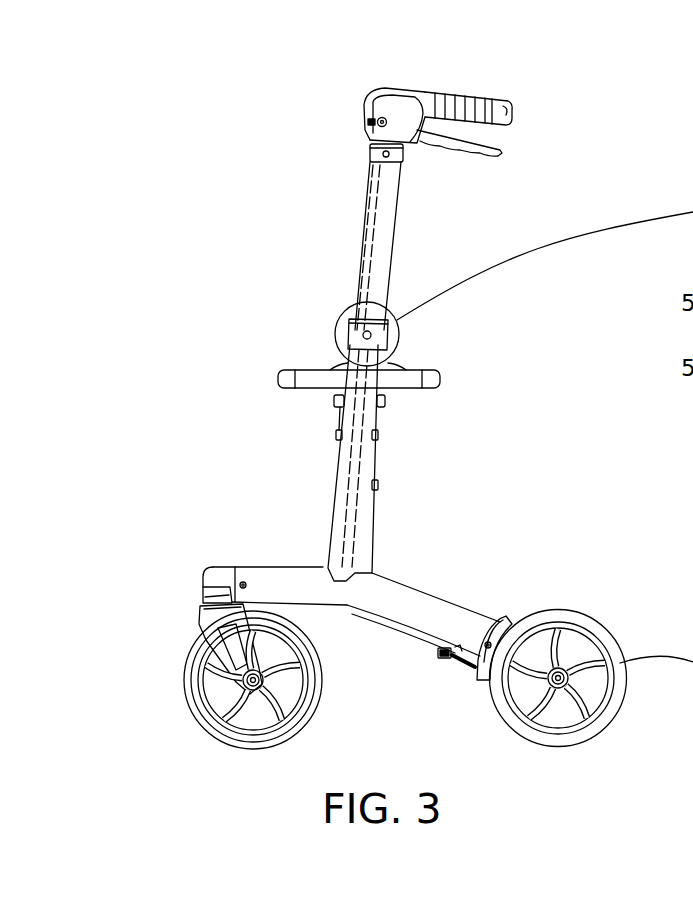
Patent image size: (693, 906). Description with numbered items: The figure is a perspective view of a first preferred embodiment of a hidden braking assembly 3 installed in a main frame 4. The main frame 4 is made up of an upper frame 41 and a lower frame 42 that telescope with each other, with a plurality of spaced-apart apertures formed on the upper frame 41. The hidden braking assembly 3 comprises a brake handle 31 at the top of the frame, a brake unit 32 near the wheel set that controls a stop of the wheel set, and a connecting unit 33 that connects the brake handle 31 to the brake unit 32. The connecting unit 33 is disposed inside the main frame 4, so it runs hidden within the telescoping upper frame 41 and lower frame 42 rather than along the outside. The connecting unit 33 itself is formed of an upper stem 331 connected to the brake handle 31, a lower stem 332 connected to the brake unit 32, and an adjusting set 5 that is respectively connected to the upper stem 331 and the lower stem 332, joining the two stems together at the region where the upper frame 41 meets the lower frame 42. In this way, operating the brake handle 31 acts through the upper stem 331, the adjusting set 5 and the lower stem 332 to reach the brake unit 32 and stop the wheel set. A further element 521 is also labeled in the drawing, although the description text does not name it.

The hidden braking assembly 3 is at (212, 221).
The brake handle 31 is at (500, 150).
The main frame 4 is at (398, 195).
The upper frame 41 is at (360, 272).
The lower frame 42 is at (342, 495).
The connecting unit 33 is at (366, 201).
The upper stem 331 is at (369, 250).
The lower stem 332 is at (356, 463).
The adjusting set 5 is at (389, 336).
The brake unit 32 is at (478, 672).
The connecting element 521 is at (692, 446).